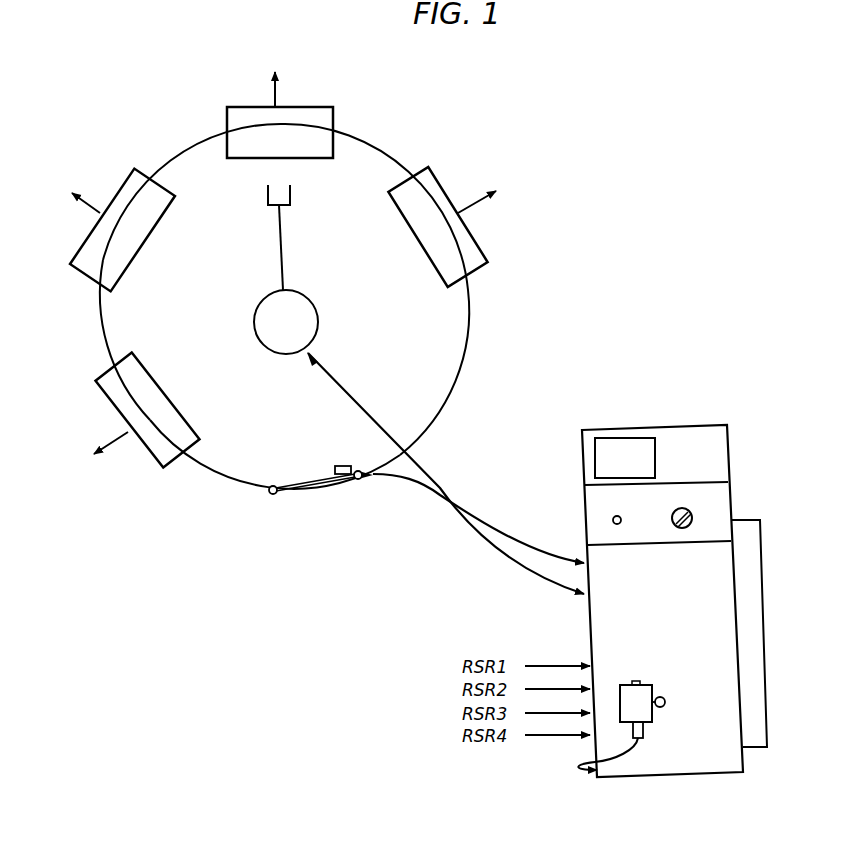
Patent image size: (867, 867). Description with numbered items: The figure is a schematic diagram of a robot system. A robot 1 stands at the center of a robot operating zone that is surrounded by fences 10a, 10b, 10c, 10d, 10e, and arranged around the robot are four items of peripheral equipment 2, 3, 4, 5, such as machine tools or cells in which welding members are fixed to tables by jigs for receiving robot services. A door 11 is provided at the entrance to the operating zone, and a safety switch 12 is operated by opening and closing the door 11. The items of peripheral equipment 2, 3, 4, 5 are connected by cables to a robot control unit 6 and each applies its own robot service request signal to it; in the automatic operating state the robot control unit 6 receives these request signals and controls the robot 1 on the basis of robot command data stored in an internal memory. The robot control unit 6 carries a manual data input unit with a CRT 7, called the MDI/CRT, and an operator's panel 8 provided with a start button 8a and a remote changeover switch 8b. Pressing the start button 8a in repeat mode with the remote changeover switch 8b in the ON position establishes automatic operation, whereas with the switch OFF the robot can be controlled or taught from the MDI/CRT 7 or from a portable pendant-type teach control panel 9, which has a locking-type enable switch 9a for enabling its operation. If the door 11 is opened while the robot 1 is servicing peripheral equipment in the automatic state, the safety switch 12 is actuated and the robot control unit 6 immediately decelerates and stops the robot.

The robot 1 is at (305, 298).
The peripheral equipment 2 is at (182, 417).
The peripheral equipment 3 is at (143, 241).
The peripheral equipment 4 is at (318, 158).
The peripheral equipment 5 is at (430, 263).
The robot control unit 6 is at (695, 757).
The manual data input unit with a CRT 7 is at (683, 430).
The operator's panel 8 is at (718, 495).
The start button 8a is at (612, 520).
The remote changeover switch 8b is at (670, 508).
The teach control panel 9 is at (625, 683).
The enable switch 9a is at (665, 698).
The fence 10a is at (230, 482).
The fence 10b is at (103, 358).
The fence 10c is at (193, 145).
The fence 10d is at (377, 143).
The fence 10e is at (462, 370).
The door 11 is at (318, 492).
The safety switch 12 is at (340, 466).